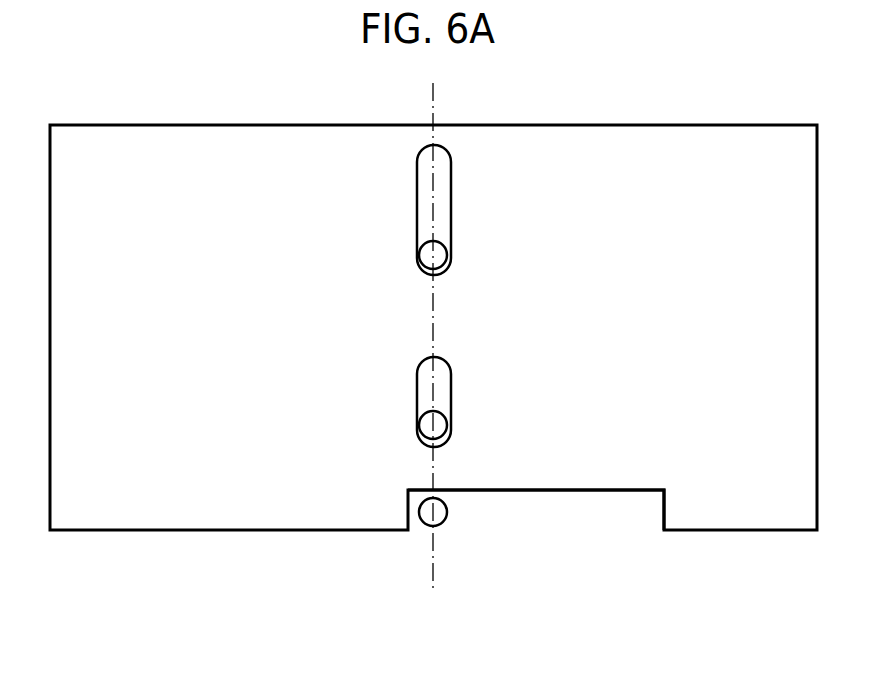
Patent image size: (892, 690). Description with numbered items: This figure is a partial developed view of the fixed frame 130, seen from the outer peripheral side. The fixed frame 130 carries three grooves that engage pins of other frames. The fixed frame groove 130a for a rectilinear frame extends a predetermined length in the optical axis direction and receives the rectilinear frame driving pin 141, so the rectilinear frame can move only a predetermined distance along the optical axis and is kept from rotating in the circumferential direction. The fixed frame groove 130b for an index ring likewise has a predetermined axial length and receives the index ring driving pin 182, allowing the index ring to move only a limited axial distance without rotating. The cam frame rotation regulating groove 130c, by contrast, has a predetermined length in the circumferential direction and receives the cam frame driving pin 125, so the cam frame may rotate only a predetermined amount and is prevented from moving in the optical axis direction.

The fixed frame 130 is at (650, 152).
The fixed frame groove for a rectilinear frame 130a is at (417, 388).
The fixed frame groove for an index ring 130b is at (450, 185).
The cam frame rotation regulating groove 130c is at (530, 518).
The index ring driving pin 182 is at (437, 257).
The rectilinear frame driving pin 141 is at (425, 433).
The cam frame driving pin 125 is at (425, 514).